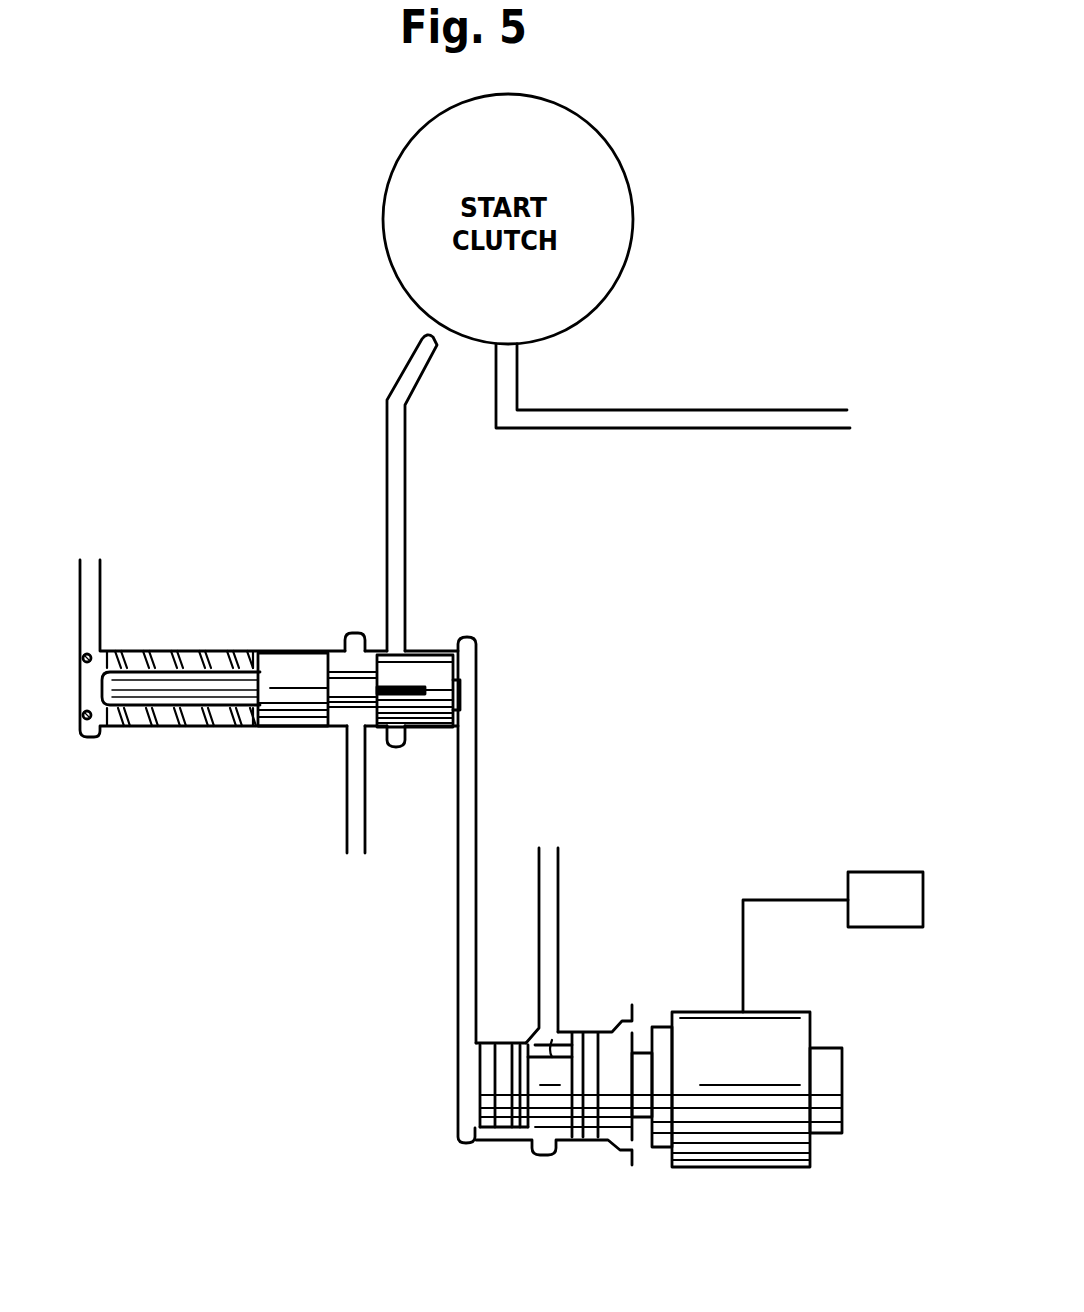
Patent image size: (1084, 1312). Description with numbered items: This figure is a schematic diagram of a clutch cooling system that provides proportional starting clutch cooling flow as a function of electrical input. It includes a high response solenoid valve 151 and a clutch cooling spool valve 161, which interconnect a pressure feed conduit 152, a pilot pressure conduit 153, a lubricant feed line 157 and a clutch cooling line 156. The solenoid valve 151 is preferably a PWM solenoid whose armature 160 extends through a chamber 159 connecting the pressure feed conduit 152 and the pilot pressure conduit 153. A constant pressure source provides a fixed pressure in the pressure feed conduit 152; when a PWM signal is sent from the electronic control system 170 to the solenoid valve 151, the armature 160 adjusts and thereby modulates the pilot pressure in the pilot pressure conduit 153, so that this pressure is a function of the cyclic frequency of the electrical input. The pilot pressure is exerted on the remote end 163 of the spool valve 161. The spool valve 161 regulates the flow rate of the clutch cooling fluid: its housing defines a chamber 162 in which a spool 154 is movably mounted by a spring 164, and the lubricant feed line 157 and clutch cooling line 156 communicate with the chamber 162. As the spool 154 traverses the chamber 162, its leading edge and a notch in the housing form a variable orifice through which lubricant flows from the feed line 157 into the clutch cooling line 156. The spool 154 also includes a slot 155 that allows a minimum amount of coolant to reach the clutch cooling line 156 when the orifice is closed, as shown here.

The high response solenoid valve 151 is at (712, 1167).
The pressure feed conduit 152 is at (555, 877).
The pilot pressure conduit 153 is at (458, 977).
The spool 154 is at (350, 703).
The slot 155 is at (407, 686).
The clutch cooling line 156 is at (400, 535).
The lubricant feed line 157 is at (350, 813).
The chamber 159 is at (552, 1040).
The armature 160 is at (552, 1112).
The clutch cooling spool valve 161 is at (183, 728).
The chamber 162 is at (340, 658).
The remote end 163 is at (453, 668).
The spring 164 is at (187, 651).
The electronic control system 170 is at (906, 920).